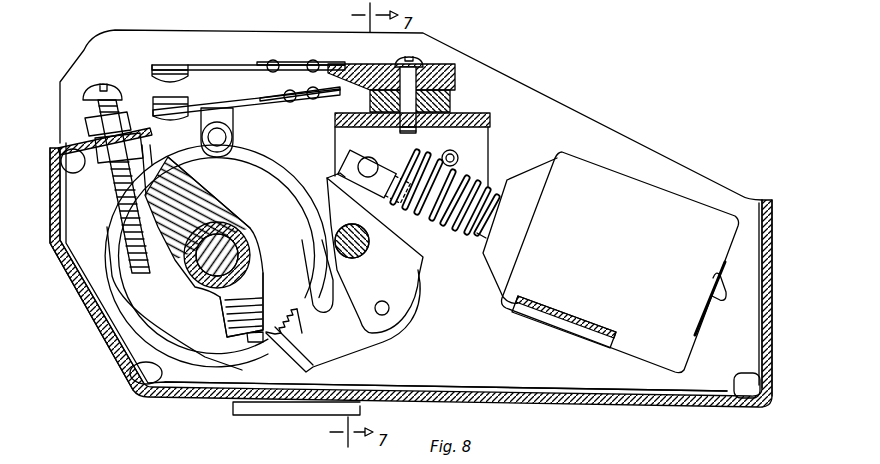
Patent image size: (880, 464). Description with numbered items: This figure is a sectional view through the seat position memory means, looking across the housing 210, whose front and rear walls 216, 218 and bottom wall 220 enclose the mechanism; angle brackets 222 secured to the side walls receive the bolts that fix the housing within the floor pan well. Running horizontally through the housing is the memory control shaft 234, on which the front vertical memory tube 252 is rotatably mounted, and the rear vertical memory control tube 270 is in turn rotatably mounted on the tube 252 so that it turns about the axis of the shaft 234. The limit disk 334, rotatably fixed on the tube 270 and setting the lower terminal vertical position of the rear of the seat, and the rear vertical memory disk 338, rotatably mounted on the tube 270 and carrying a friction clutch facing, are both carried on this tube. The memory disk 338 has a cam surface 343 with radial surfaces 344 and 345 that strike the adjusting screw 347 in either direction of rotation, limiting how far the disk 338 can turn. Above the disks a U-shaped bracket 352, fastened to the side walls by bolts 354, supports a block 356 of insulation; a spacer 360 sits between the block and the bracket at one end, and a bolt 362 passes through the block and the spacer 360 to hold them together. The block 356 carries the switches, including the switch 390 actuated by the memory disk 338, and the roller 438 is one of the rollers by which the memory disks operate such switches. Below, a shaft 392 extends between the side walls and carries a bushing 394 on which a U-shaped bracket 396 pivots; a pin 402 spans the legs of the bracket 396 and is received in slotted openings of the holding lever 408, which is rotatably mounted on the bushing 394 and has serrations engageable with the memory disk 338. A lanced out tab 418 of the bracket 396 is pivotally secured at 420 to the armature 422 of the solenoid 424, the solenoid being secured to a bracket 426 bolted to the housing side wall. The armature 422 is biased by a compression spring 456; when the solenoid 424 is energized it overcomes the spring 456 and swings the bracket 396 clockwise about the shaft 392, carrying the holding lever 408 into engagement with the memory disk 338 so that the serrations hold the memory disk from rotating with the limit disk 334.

The housing 210 is at (723, 380).
The front wall 216 is at (77, 297).
The rear wall 218 is at (773, 217).
The bottom wall 220 is at (637, 400).
The angle brackets 222 is at (233, 404).
The horizontal memory control shaft 234 is at (228, 247).
The front vertical memory tube 252 is at (245, 273).
The rear vertical memory control tube 270 is at (243, 223).
The rear vertical limit disk 334 is at (343, 167).
The rear vertical memory disk 338 is at (288, 167).
The cam surface 343 is at (215, 202).
The radial surface 344 is at (150, 170).
The radial surface 345 is at (238, 317).
The adjusting screw 347 is at (83, 96).
The U-shaped bracket 352 is at (477, 163).
The bolts 354 is at (458, 156).
The block of insulation 356 is at (457, 83).
The spacer 360 is at (437, 107).
The bolt 362 is at (420, 63).
The switch 390 is at (228, 65).
The shaft 392 is at (368, 238).
The bushing 394 is at (360, 255).
The U-shaped bracket 396 is at (403, 280).
The pin 402 is at (389, 308).
The holding lever 408 is at (360, 340).
The lanced out tab 418 is at (347, 182).
The pivot 420 is at (366, 160).
The armature 422 is at (440, 222).
The solenoid 424 is at (597, 177).
The bracket 426 is at (560, 332).
The roller 438 is at (248, 177).
The compression spring 456 is at (482, 268).